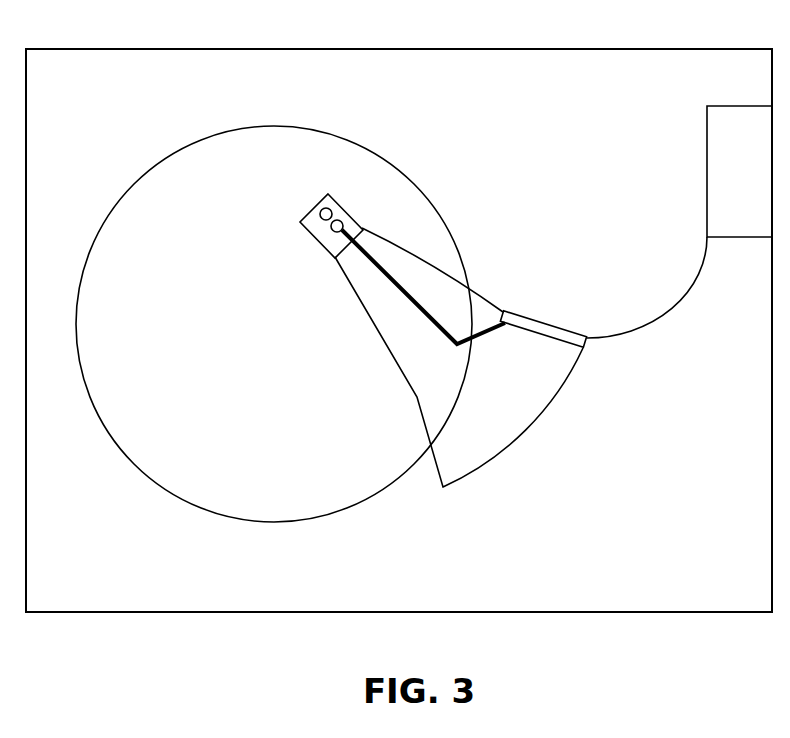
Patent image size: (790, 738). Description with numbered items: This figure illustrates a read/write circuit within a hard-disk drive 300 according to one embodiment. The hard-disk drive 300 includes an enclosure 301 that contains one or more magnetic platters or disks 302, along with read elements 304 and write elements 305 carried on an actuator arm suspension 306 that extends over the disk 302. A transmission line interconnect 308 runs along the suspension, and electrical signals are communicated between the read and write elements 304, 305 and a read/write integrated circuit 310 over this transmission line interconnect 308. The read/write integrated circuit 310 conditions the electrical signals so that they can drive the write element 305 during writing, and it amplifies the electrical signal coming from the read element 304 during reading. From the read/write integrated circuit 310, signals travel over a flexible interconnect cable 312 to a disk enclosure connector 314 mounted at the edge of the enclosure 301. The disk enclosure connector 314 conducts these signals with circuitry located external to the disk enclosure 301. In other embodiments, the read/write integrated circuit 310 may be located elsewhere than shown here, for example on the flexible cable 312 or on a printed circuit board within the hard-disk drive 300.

The hard-disk drive 300 is at (426, 35).
The enclosure 301 is at (673, 48).
The magnetic platters or disks 302 is at (400, 167).
The read elements 304 is at (308, 220).
The write elements 305 is at (348, 218).
The actuator arm suspension 306 is at (522, 445).
The transmission line interconnect 308 is at (414, 307).
The read/write integrated circuit 310 is at (537, 320).
The flexible interconnect cable 312 is at (650, 316).
The disk enclosure connector 314 is at (712, 180).